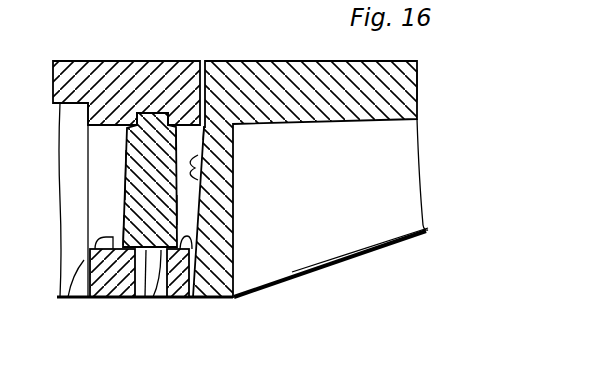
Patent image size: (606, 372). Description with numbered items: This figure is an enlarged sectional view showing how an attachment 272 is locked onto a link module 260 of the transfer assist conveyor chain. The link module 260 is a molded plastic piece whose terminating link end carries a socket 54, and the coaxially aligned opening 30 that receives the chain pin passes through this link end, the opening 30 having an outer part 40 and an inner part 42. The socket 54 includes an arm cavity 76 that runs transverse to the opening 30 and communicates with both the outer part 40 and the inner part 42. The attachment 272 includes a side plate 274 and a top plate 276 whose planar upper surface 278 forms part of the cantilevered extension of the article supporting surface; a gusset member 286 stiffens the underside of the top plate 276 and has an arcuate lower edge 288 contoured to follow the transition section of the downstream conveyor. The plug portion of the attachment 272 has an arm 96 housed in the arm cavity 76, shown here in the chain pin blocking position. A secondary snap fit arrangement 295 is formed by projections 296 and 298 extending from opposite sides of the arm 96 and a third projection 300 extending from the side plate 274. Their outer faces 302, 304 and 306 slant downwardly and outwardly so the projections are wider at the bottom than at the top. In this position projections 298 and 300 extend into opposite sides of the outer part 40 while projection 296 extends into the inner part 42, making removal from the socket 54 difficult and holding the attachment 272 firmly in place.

The link module 260 is at (87, 60).
The planar upper surface 278 is at (244, 60).
The attachment 272 is at (302, 60).
The top plate 276 is at (386, 83).
The gusset member 286 is at (402, 165).
The projection 298 is at (198, 148).
The outer face 306 is at (173, 151).
The third projection 300 is at (195, 178).
The outer face 304 is at (176, 209).
The coaxially aligned opening 30 is at (87, 148).
The socket 54 is at (104, 158).
The secondary snap fit arrangement 295 is at (113, 189).
The outer face 302 is at (124, 208).
The projection 296 is at (124, 222).
The inner part 42 is at (62, 298).
The arm 96 is at (134, 298).
The arm cavity 76 is at (146, 297).
The outer part 40 is at (191, 252).
The side plate 274 is at (238, 297).
The arcuate lower edge 288 is at (352, 252).